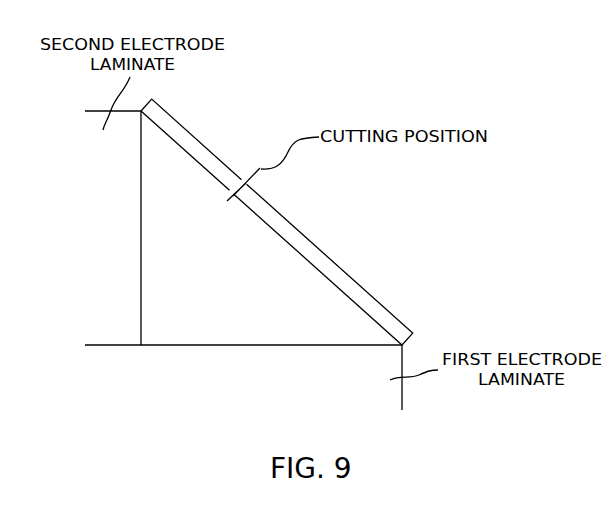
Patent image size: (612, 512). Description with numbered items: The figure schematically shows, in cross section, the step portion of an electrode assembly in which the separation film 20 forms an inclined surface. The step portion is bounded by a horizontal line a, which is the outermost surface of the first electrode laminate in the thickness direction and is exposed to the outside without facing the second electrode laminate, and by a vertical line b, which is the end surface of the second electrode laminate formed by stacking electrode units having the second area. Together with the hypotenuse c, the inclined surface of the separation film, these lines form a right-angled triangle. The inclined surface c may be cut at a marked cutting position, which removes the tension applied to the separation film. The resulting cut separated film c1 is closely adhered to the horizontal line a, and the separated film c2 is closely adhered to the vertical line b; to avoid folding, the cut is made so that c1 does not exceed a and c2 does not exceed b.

The electrode laminate strip 20 is at (277, 222).
The horizontal line a is at (243, 332).
The vertical line b is at (152, 228).
The hypotenuse c is at (277, 222).
The cut separated film c1 is at (350, 200).
The separated film c2 is at (191, 144).